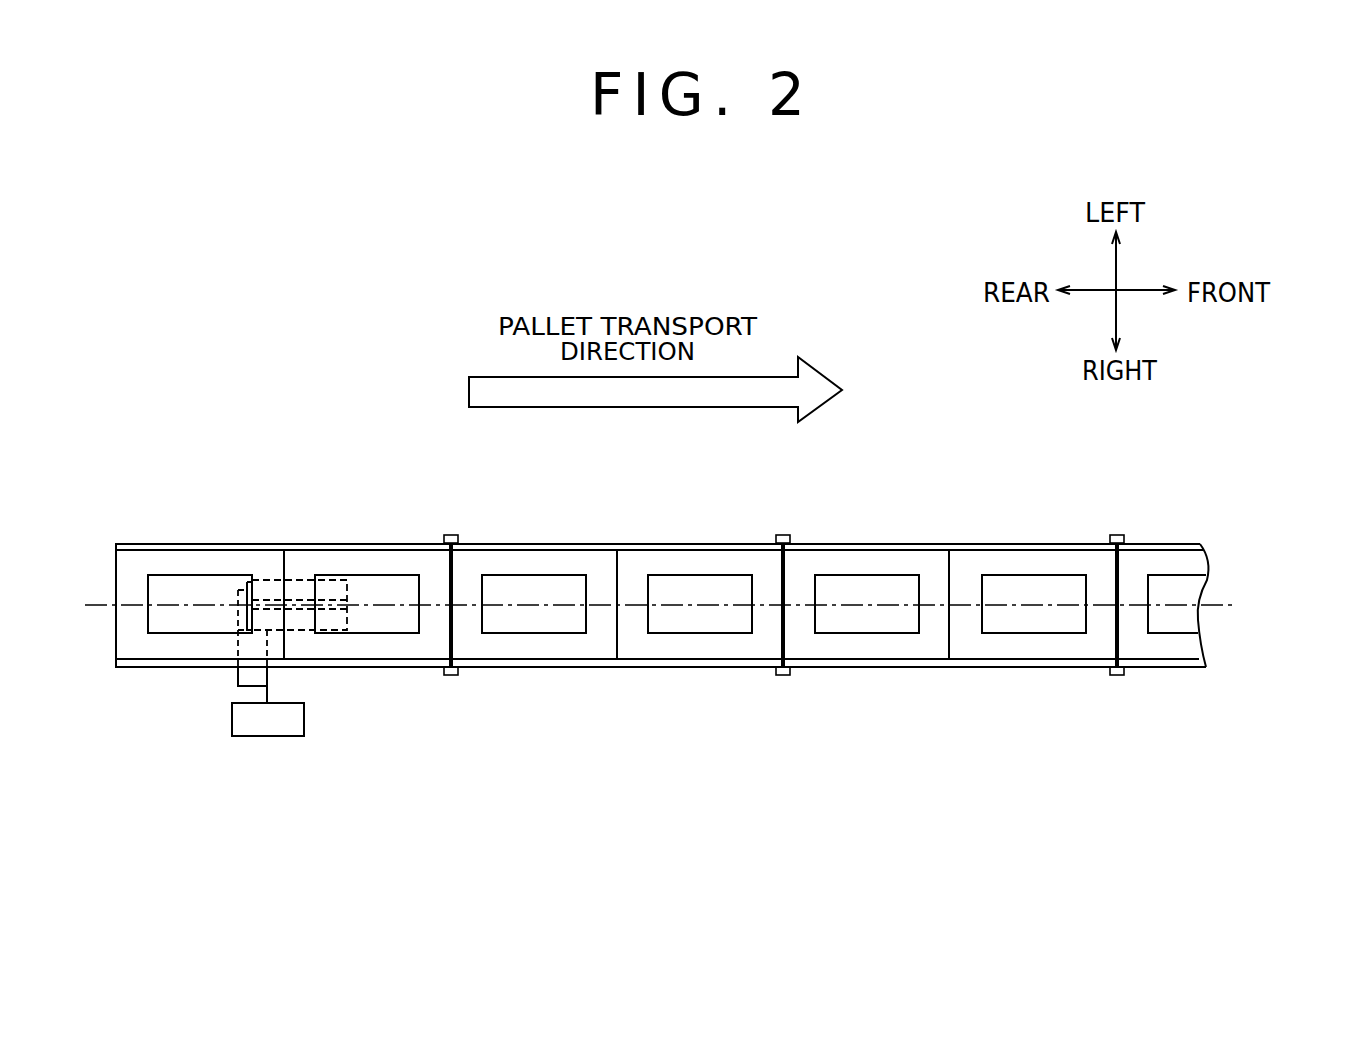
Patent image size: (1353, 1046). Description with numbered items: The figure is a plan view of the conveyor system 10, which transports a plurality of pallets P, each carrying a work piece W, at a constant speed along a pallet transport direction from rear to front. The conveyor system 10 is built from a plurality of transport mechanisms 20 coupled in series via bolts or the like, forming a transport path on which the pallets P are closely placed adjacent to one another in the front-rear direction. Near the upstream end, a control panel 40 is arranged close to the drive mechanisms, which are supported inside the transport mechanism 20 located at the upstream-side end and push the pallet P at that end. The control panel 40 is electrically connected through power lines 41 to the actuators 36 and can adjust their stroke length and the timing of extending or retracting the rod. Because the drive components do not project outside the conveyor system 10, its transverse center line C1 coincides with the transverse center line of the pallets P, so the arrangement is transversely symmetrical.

The conveyor system 10 is at (170, 418).
The transport mechanism 20 is at (415, 667).
The actuator 36 is at (276, 570).
The control panel 40 is at (275, 723).
The power line 41 is at (238, 676).
The pallet P is at (410, 543).
The work piece W is at (181, 590).
The center line of the conveyor system C1 is at (1240, 612).